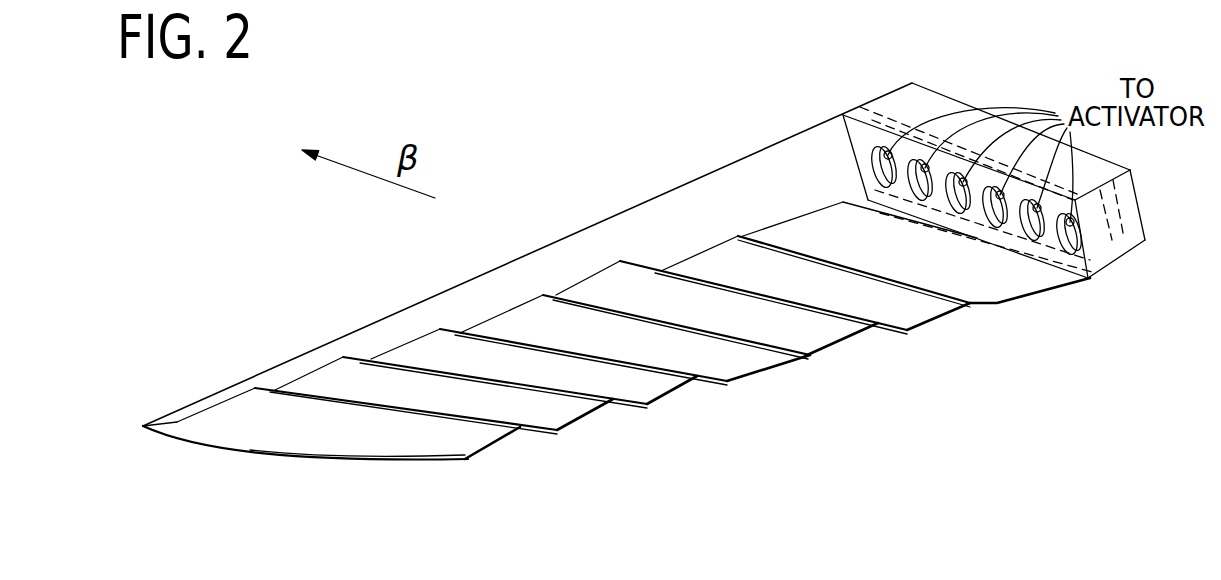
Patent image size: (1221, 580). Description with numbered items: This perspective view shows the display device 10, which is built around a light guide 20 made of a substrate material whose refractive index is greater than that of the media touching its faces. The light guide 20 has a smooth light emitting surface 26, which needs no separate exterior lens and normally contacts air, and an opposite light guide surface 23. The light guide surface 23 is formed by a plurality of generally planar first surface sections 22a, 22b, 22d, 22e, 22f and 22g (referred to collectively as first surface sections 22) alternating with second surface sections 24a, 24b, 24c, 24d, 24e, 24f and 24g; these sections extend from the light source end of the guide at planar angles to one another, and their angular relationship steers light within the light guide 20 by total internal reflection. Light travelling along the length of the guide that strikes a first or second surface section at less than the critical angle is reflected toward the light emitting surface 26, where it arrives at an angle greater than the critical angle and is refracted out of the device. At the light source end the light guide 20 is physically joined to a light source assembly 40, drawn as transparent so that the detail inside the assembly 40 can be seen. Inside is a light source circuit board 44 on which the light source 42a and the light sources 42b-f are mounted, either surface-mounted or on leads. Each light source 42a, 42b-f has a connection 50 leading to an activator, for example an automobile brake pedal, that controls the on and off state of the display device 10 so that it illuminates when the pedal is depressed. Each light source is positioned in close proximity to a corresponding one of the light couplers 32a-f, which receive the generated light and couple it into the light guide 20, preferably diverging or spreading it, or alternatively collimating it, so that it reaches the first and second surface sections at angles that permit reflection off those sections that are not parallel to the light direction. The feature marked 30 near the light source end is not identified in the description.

The display device 10 is at (794, 437).
The light guide 20 is at (627, 215).
The first surface sections 22 is at (700, 313).
The first surface section 22a is at (873, 249).
The first surface section 22b is at (837, 296).
The first surface section 22d is at (647, 353).
The first surface section 22e is at (540, 375).
The first surface section 22f is at (475, 408).
The first surface section 22g is at (372, 435).
The light guide surface 23 is at (395, 436).
The second surface section 24a is at (940, 291).
The second surface section 24b is at (866, 324).
The second surface section 24c is at (768, 349).
The second surface section 24d is at (686, 379).
The second surface section 24e is at (607, 404).
The second surface section 24f is at (523, 433).
The second surface section 24g is at (411, 459).
The light emitting surface 26 is at (491, 262).
The actuator housing 30 is at (857, 148).
The light couplers 32a-f is at (877, 150).
The light source assembly 40 is at (903, 96).
The light source 42a is at (892, 152).
The light sources 42b-f is at (1070, 226).
The light source circuit board 44 is at (915, 205).
The connection 50 is at (958, 132).